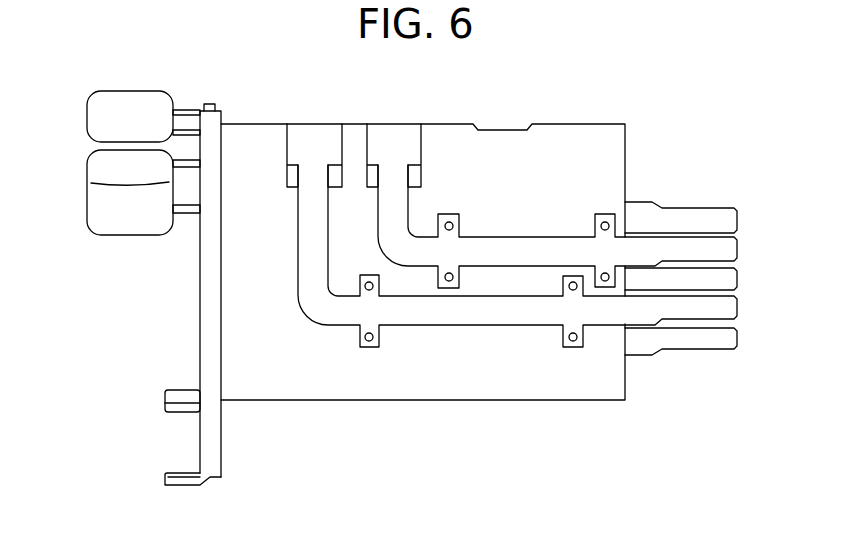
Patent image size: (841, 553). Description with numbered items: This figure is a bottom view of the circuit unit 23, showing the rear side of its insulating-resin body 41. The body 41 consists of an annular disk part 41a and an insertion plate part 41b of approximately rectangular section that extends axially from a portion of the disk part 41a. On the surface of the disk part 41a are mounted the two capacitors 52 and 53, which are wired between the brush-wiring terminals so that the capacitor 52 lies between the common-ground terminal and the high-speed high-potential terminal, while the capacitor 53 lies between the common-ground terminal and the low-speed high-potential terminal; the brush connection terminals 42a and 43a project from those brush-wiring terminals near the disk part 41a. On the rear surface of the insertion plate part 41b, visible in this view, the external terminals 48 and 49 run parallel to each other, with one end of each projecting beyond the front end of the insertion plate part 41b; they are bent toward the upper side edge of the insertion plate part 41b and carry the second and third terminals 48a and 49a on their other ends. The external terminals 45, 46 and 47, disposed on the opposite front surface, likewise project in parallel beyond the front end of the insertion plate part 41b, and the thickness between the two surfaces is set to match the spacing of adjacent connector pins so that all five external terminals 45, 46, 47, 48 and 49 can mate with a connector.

The circuit unit 23 is at (412, 287).
The body 41 is at (412, 308).
The disk part 41a is at (212, 452).
The insertion plate part 41b is at (343, 388).
The brush connection terminal 42a is at (183, 484).
The brush connection terminal 43a is at (185, 395).
The external terminal 45 is at (737, 277).
The external terminal 46 is at (737, 339).
The external terminal 47 is at (737, 217).
The external terminal 48 is at (540, 243).
The second terminal 48a is at (395, 133).
The external terminal 49 is at (490, 318).
The third terminal 49a is at (312, 133).
The capacitor 52 is at (128, 228).
The capacitor 53 is at (90, 112).